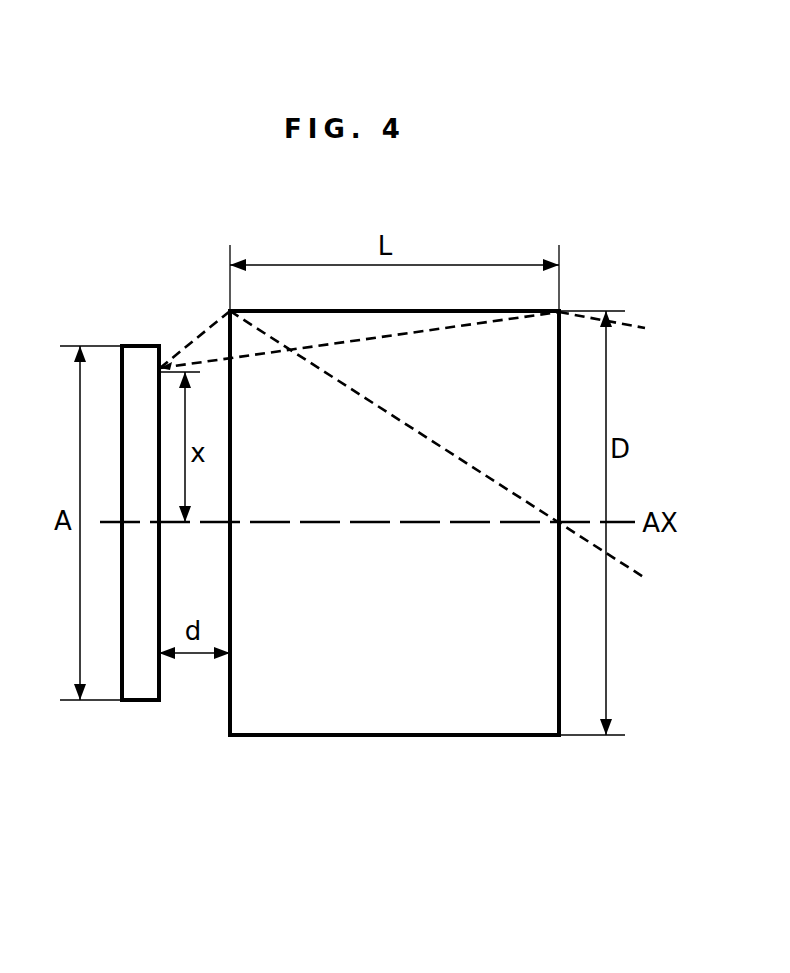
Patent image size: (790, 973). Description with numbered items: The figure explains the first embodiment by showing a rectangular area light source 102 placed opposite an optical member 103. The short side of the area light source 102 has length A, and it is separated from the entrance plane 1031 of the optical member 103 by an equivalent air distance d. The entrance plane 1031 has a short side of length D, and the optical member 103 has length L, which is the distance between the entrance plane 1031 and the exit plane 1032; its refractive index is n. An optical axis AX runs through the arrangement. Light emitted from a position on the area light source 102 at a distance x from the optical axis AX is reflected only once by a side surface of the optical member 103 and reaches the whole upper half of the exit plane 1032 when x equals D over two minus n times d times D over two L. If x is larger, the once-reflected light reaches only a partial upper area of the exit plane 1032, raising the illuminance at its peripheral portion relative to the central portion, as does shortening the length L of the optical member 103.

The area light source 102 is at (136, 690).
The optical member 103 is at (362, 708).
The entrance plane 1031 is at (228, 708).
The exit plane 1032 is at (558, 687).